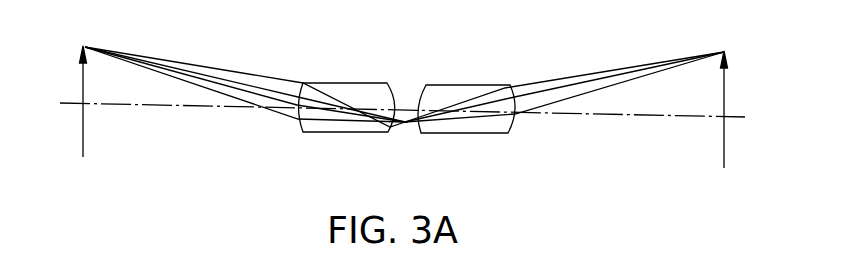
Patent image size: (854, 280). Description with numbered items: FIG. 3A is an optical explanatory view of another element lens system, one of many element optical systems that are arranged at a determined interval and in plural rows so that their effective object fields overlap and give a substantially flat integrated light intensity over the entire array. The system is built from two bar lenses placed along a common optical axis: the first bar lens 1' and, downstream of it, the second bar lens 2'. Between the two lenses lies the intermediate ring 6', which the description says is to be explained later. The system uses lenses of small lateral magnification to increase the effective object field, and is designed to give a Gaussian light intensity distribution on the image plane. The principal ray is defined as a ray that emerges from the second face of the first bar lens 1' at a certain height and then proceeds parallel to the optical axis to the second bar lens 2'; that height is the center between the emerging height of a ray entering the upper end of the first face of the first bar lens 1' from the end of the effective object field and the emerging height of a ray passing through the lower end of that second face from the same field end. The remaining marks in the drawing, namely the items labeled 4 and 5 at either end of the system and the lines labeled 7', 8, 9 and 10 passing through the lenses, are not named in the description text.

The object arrow 4 is at (84, 137).
The image arrow 5 is at (724, 148).
The first bar lens 1' is at (341, 124).
The second bar lens 2' is at (472, 126).
The intermediate ring 6' is at (419, 87).
The light ray 7' is at (245, 84).
The light ray 8 is at (242, 71).
The light ray 9 is at (223, 85).
The light ray 10 is at (277, 113).